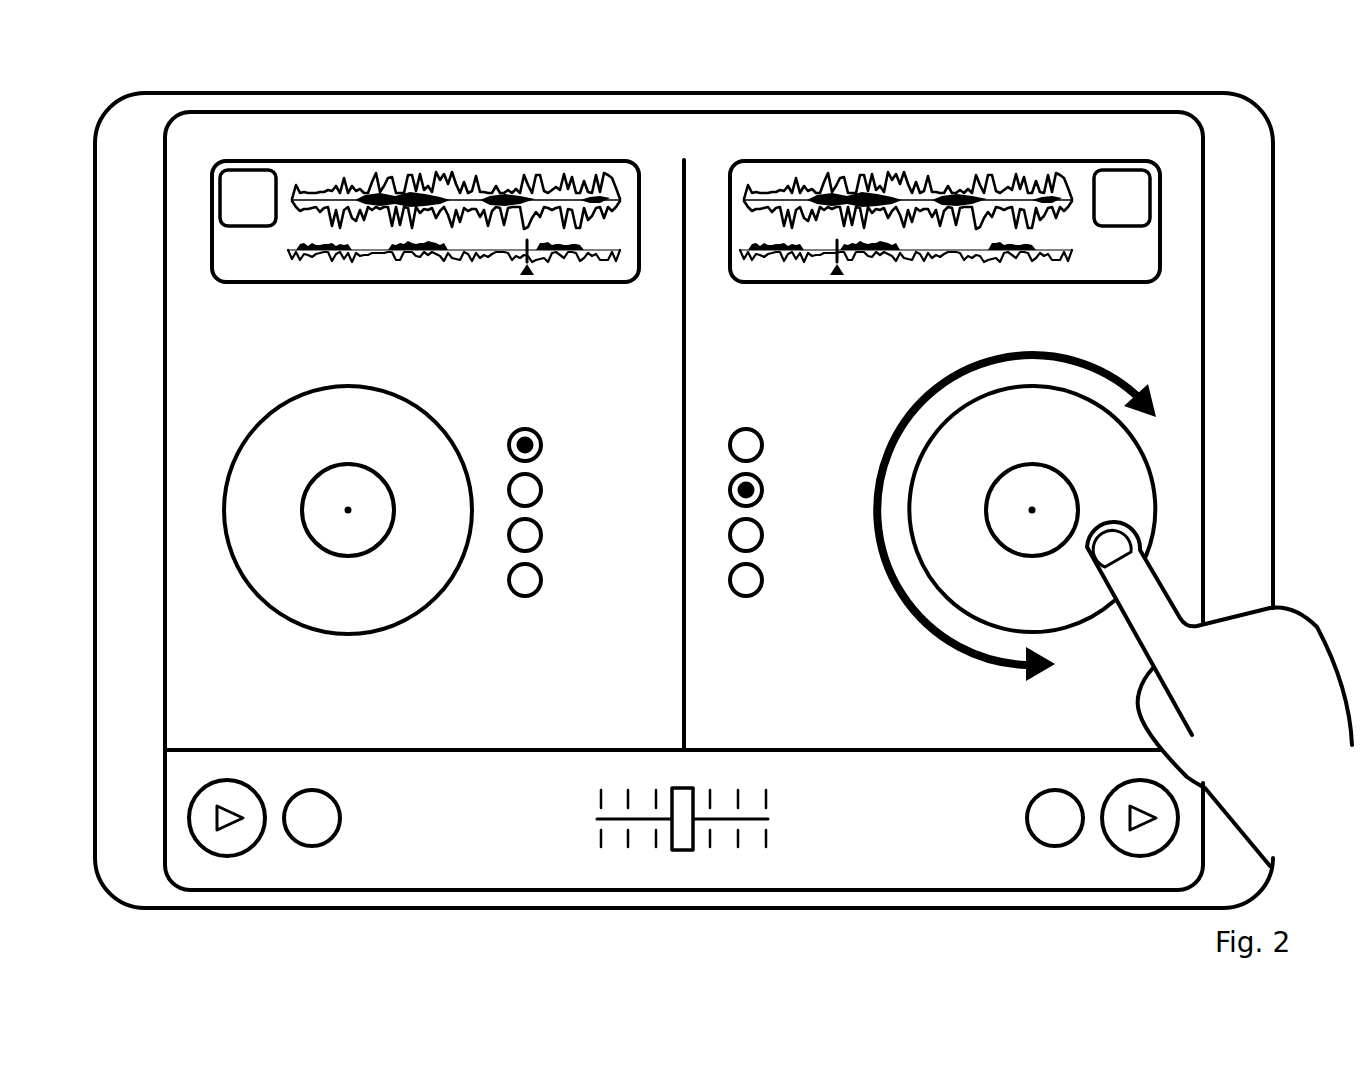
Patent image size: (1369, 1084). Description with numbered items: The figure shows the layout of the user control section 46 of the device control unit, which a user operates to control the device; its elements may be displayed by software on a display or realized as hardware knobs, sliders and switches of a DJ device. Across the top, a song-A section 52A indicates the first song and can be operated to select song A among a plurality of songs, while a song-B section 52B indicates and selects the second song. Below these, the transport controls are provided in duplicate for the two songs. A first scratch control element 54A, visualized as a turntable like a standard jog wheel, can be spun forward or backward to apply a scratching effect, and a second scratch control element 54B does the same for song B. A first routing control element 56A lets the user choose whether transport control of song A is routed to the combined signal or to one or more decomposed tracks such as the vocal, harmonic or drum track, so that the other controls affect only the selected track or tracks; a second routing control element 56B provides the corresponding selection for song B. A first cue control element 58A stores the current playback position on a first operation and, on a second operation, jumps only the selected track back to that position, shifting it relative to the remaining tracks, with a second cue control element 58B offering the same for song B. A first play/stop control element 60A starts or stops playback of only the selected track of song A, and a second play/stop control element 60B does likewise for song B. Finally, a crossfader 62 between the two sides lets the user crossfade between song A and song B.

The user control section 46 is at (98, 114).
The song-A section 52A is at (317, 176).
The song-B section 52B is at (1013, 176).
The first scratch control element 54A is at (289, 418).
The second scratch control element 54B is at (992, 418).
The first routing control element 56A is at (562, 424).
The second routing control element 56B is at (770, 417).
The first cue control element 58A is at (327, 808).
The second cue control element 58B is at (1028, 818).
The first play/stop control element 60A is at (243, 792).
The second play/stop control element 60B is at (1125, 797).
The crossfader 62 is at (685, 797).